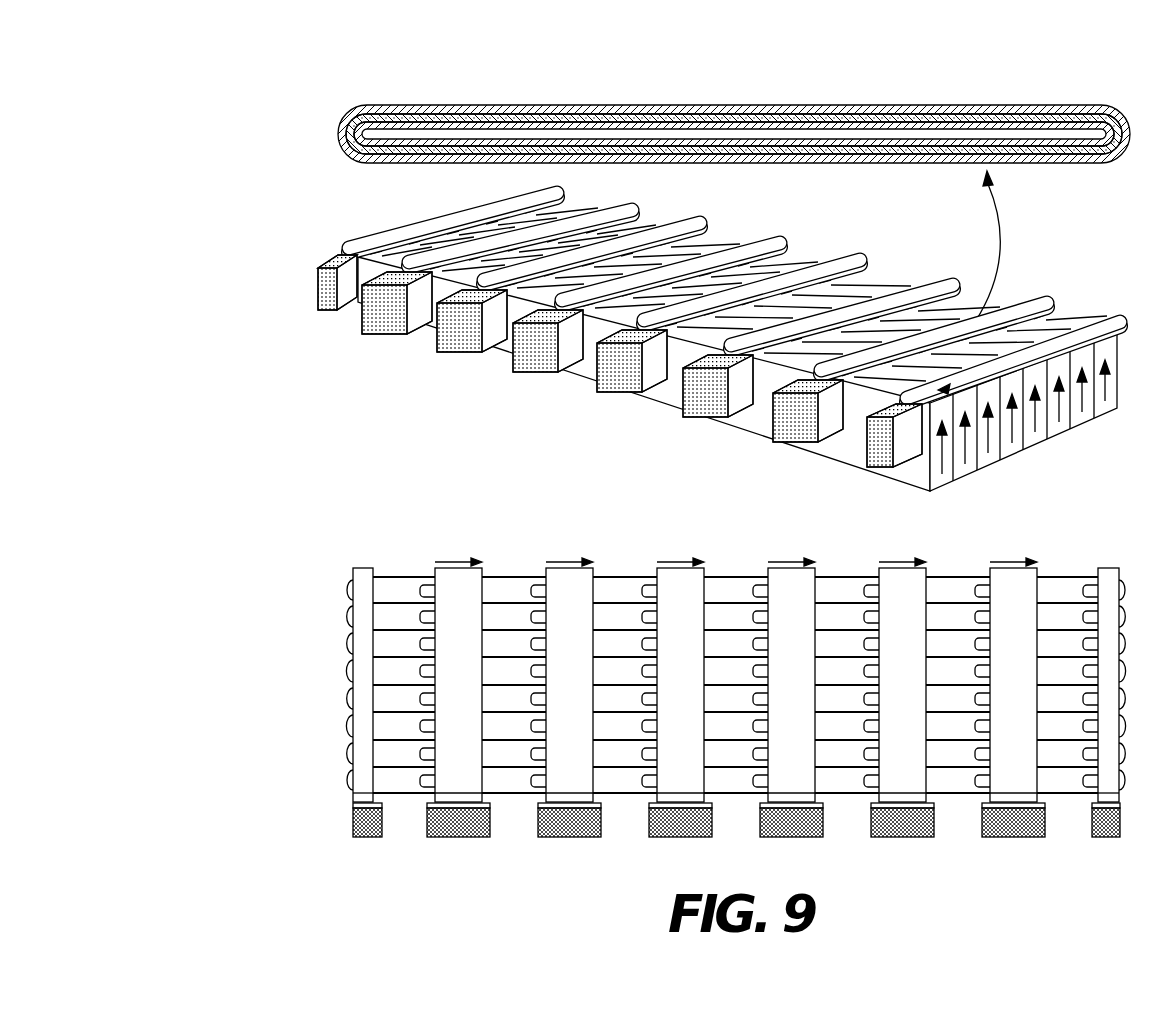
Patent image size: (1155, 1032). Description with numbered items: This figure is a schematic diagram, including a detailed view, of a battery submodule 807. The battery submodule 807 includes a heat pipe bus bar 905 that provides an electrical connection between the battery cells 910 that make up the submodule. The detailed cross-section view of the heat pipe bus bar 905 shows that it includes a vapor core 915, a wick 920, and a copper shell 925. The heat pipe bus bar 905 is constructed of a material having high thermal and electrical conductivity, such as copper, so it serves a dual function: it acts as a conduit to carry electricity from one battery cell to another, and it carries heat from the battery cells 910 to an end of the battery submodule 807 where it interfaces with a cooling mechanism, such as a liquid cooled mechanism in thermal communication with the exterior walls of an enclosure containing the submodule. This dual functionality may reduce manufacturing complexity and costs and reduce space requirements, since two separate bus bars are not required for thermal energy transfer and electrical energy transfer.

The battery submodule 807 is at (222, 40).
The heat pipe bus bar 905 is at (340, 180).
The battery cells 910 is at (609, 571).
The vapor core 915 is at (600, 122).
The wick 920 is at (718, 112).
The copper shell 925 is at (855, 96).